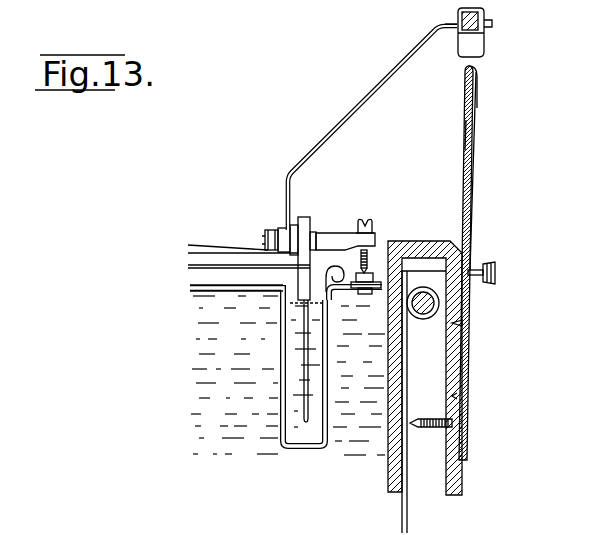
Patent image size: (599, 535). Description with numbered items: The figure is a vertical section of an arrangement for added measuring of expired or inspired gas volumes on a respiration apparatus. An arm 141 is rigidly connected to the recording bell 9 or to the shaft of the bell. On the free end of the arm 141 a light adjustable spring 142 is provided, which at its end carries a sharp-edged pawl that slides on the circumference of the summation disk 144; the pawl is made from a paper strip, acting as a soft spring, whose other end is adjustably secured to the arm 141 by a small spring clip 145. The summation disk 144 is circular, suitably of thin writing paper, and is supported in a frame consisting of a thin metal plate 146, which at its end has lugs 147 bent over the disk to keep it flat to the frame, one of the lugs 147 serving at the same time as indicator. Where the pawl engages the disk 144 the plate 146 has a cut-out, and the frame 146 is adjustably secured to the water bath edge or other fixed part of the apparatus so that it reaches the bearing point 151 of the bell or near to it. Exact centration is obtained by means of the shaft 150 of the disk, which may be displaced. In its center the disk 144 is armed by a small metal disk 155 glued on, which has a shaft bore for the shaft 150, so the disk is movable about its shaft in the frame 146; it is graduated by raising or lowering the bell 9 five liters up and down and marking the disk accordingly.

The recording bell 9 is at (213, 260).
The arm 141 is at (348, 111).
The light adjustable spring 142 is at (474, 46).
The summation disk 144 is at (477, 138).
The spring clip 145 is at (457, 20).
The thin metal plate 146 is at (464, 134).
The lugs 147 is at (480, 90).
The shaft 150 is at (478, 272).
The bearing point 151 is at (380, 250).
The small metal disk 155 is at (475, 268).